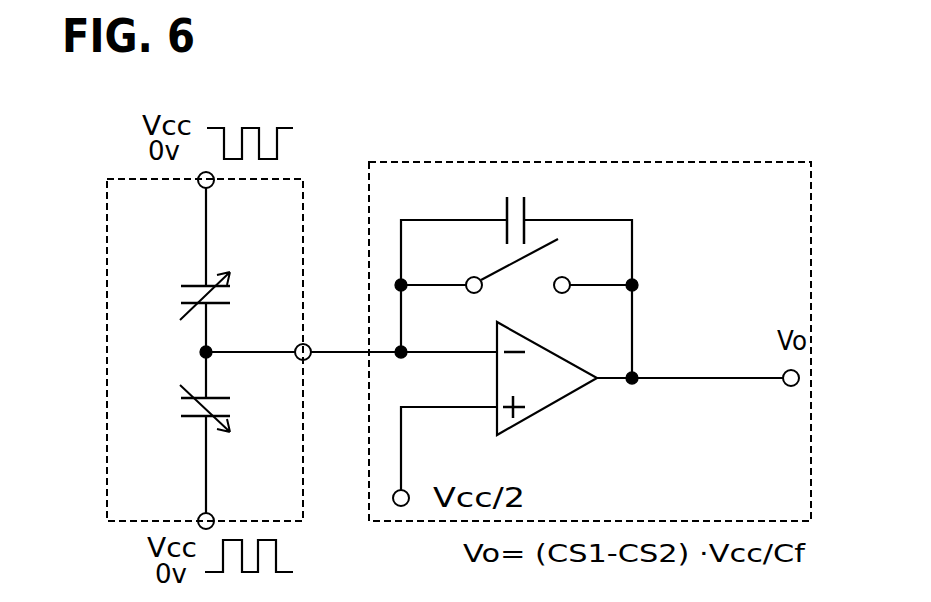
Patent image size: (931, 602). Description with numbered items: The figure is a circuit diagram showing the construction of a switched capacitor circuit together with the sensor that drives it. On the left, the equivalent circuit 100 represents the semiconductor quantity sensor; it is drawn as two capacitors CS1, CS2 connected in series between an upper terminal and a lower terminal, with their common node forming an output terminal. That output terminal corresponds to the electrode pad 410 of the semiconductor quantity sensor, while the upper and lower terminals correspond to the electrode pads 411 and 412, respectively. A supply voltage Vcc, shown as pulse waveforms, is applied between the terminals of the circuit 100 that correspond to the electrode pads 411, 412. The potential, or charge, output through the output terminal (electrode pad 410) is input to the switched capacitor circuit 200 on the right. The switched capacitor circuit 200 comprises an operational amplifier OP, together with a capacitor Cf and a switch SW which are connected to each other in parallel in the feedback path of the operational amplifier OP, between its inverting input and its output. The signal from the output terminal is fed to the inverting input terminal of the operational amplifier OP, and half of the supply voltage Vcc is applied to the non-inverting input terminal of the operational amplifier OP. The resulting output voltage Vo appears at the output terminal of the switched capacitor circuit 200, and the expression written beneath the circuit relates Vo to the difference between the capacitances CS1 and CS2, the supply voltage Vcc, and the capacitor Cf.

The equivalent circuit of the semiconductor quantity sensor 100 is at (295, 178).
The switched capacitor circuit 200 is at (646, 162).
The electrode pad 410 is at (309, 358).
The electrode pad 411 is at (198, 183).
The electrode pad 412 is at (198, 518).
The first variable sensing capacitor CS1 is at (176, 312).
The second variable sensing capacitor CS2 is at (176, 432).
The capacitor Cf is at (516, 273).
The switch SW is at (548, 243).
The operational amplifier OP is at (550, 407).